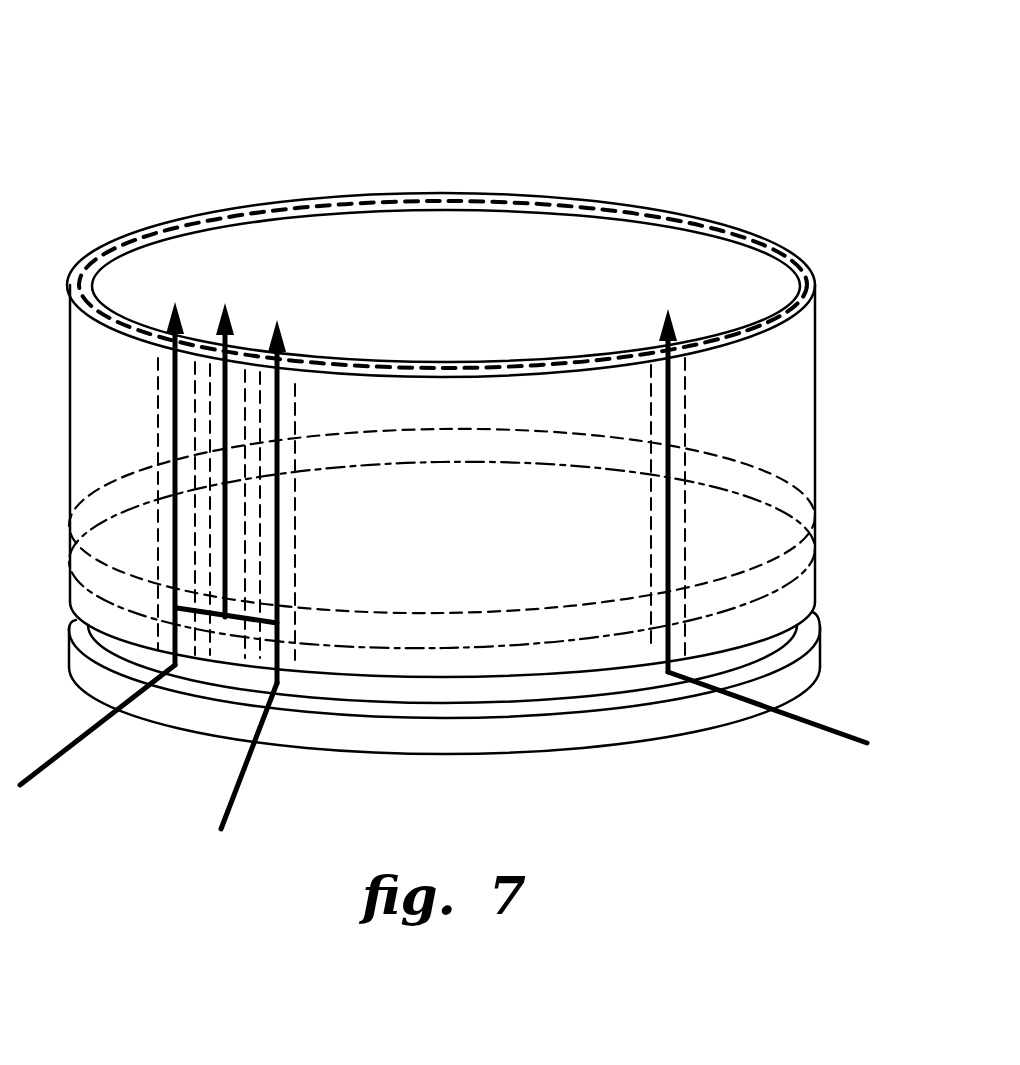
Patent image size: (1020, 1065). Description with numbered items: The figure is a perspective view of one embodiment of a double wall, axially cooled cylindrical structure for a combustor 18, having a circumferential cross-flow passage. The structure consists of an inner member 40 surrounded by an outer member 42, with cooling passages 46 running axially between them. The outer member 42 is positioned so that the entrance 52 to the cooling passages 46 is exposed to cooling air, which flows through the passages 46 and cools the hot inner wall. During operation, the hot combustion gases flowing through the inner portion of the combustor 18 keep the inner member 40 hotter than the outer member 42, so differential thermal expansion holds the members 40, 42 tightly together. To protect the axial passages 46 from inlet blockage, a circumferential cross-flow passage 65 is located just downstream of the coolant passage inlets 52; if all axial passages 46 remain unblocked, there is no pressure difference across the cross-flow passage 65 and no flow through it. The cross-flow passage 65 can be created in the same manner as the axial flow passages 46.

The combustor 18 is at (154, 184).
The inner member 40 is at (547, 212).
The outer member 42 is at (807, 340).
The cooling passages 46 is at (650, 208).
The entrance 52 is at (690, 660).
The circumferential cross-flow passage 65 is at (598, 637).